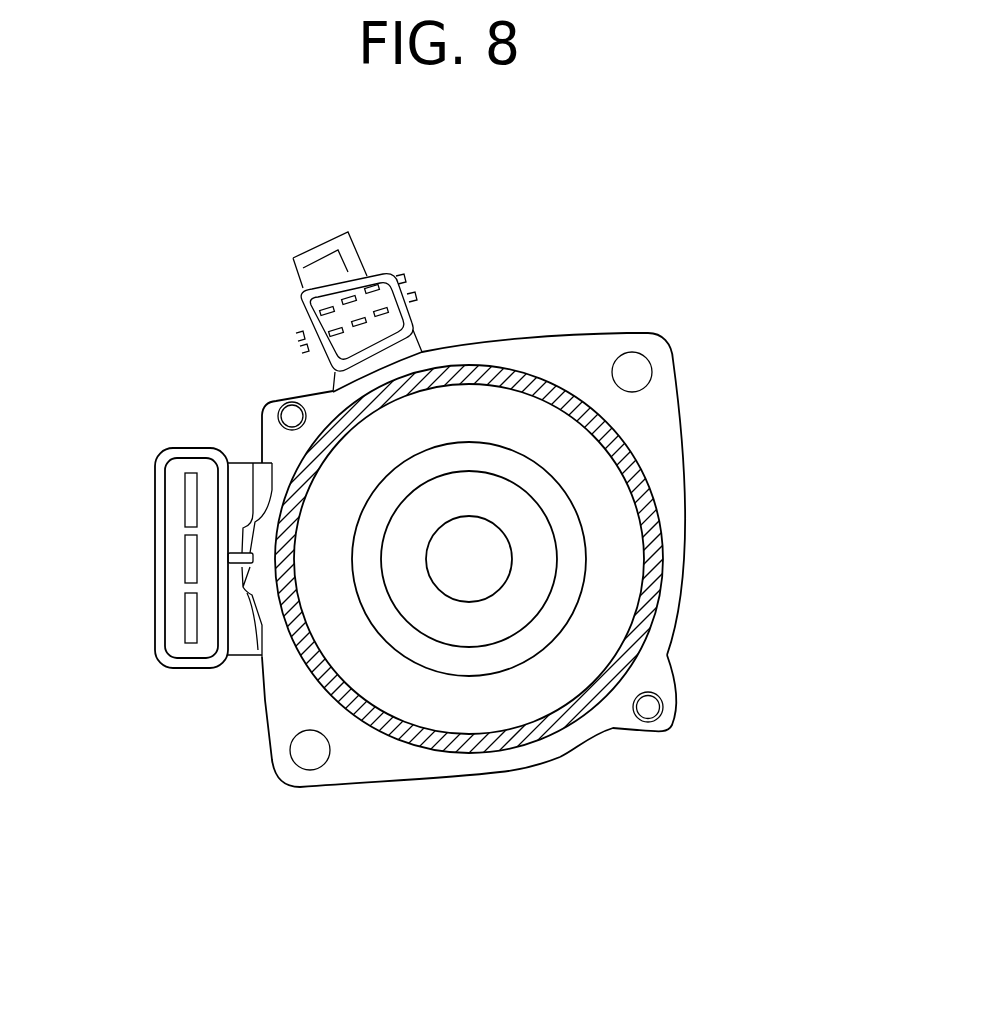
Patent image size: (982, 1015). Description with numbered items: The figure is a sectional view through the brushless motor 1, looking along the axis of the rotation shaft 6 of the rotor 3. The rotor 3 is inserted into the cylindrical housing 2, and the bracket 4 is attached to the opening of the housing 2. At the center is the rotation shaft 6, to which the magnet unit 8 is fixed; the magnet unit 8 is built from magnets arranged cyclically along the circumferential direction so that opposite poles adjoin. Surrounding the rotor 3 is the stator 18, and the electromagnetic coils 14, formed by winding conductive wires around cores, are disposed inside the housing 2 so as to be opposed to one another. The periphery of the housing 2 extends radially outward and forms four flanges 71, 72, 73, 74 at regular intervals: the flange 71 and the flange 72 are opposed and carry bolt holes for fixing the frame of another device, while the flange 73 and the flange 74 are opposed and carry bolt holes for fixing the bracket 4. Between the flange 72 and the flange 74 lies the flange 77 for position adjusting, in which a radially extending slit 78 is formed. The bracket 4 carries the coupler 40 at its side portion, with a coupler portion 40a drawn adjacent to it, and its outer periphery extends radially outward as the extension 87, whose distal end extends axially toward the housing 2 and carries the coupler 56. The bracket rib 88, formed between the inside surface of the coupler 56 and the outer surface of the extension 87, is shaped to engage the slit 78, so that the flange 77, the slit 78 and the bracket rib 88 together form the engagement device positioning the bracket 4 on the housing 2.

The brushless motor 1 is at (753, 378).
The housing 2 is at (643, 463).
The rotor 3 is at (561, 583).
The bracket 4 is at (427, 327).
The rotation shaft 6 is at (512, 559).
The magnet unit 8 is at (482, 492).
The electromagnetic coils 14 is at (592, 632).
The stator 18 is at (670, 608).
The coupler 40 is at (403, 270).
The connector mounting portion 40a is at (230, 463).
The coupler 56 is at (166, 452).
The flange 71 is at (657, 375).
The flange 72 is at (348, 772).
The flange 73 is at (643, 727).
The flange 74 is at (282, 402).
The flange for position adjusting 77 is at (253, 463).
The slit 78 is at (243, 645).
The extension 87 is at (223, 668).
The bracket rib 88 is at (230, 562).